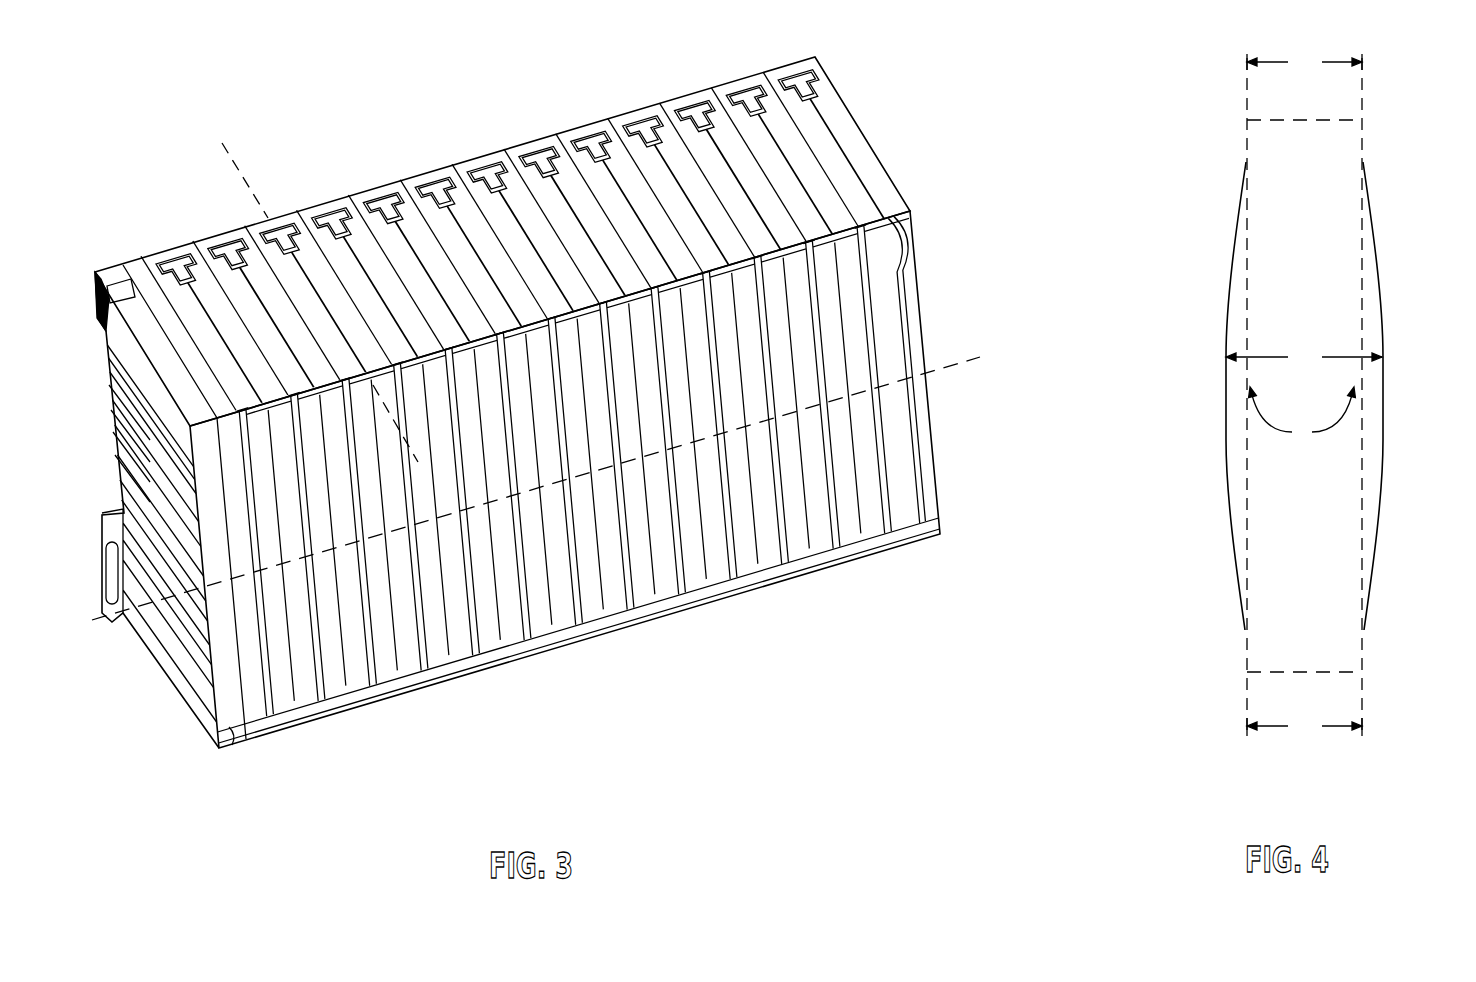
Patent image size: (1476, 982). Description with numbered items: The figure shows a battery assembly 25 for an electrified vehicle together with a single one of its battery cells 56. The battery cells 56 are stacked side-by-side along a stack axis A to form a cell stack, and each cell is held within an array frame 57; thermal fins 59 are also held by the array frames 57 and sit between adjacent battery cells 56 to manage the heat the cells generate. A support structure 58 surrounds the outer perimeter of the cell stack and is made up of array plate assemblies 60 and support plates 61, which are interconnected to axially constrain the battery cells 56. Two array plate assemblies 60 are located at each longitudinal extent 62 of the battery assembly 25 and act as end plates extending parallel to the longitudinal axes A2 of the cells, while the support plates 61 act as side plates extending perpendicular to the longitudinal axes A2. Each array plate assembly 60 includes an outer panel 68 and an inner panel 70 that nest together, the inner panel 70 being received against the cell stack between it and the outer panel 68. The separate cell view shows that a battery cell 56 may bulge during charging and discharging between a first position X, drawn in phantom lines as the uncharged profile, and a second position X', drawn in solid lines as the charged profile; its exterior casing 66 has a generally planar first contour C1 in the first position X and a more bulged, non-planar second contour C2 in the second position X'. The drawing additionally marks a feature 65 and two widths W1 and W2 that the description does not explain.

In FIG. 3, the battery assembly 25 is at (315, 132).
In FIG. 3, the battery cell 56 is at (870, 556).
In FIG. 4, the battery cell 56 is at (1193, 170).
In FIG. 3, the array frame 57 is at (437, 178).
In FIG. 3, the support structure 58 is at (857, 118).
In FIG. 3, the thermal fin 59 is at (888, 438).
In FIG. 3, the array plate assembly 60 is at (125, 263).
In FIG. 3, the support plate 61 is at (378, 170).
In FIG. 3, the longitudinal extent 62 is at (413, 757).
In FIG. 3, the end plate top portion 65 is at (218, 247).
In FIG. 4, the exterior casing 66 is at (1235, 373).
In FIG. 3, the outer panel 68 is at (170, 672).
In FIG. 3, the inner panel 70 is at (237, 746).
In FIG. 3, the stack axis A is at (955, 365).
In FIG. 3, the longitudinal axis A2 is at (222, 143).
In FIG. 4, the maximum cell width W1 is at (1304, 358).
In FIG. 4, the end cell width W2 is at (1304, 395).
In FIG. 4, the first contour C1 is at (1364, 422).
In FIG. 4, the second contour C2 is at (1383, 275).
In FIG. 4, the first position X is at (1302, 415).
In FIG. 4, the second position X' is at (1305, 472).